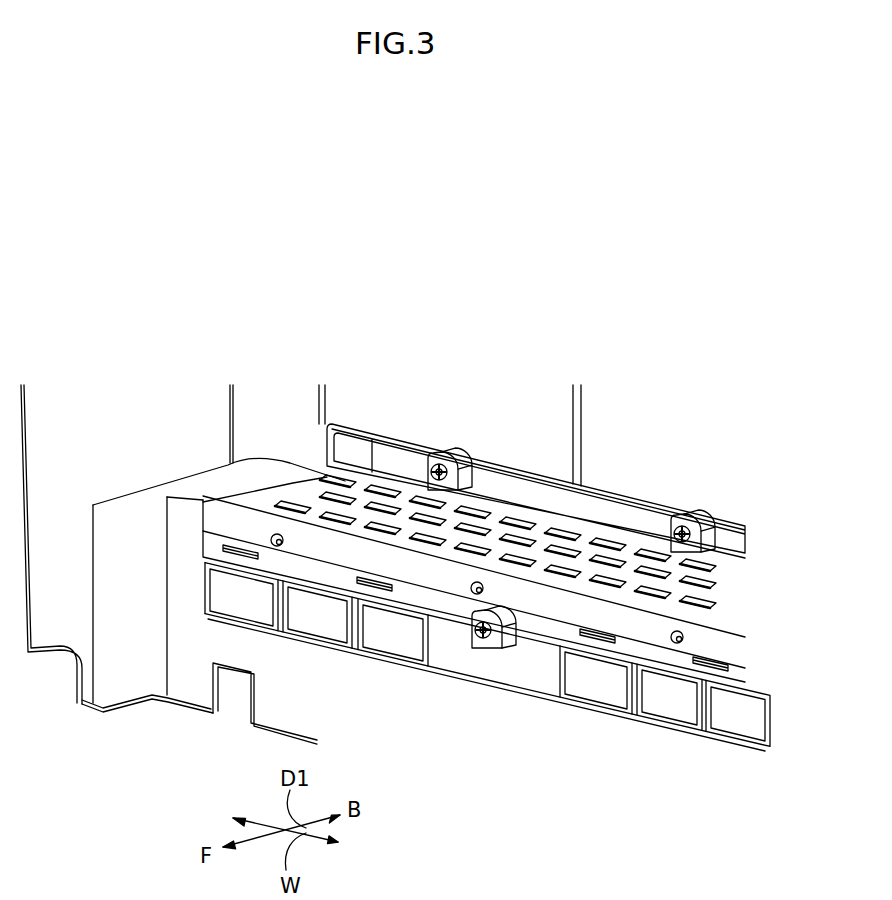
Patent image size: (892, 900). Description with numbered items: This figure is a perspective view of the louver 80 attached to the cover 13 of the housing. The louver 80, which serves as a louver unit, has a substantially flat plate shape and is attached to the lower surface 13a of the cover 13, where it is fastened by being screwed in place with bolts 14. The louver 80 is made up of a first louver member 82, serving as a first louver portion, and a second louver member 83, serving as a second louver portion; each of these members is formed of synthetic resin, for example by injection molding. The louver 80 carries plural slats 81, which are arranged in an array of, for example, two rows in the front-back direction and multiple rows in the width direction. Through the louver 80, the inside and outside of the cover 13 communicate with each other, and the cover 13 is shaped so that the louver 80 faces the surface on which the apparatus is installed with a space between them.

The cover 13 is at (43, 633).
The lower surface 13a is at (258, 470).
The bolts 14 is at (452, 472).
The louver 80 is at (449, 579).
The slats 81 is at (379, 484).
The first louver member 82 is at (205, 522).
The second louver member 83 is at (203, 544).